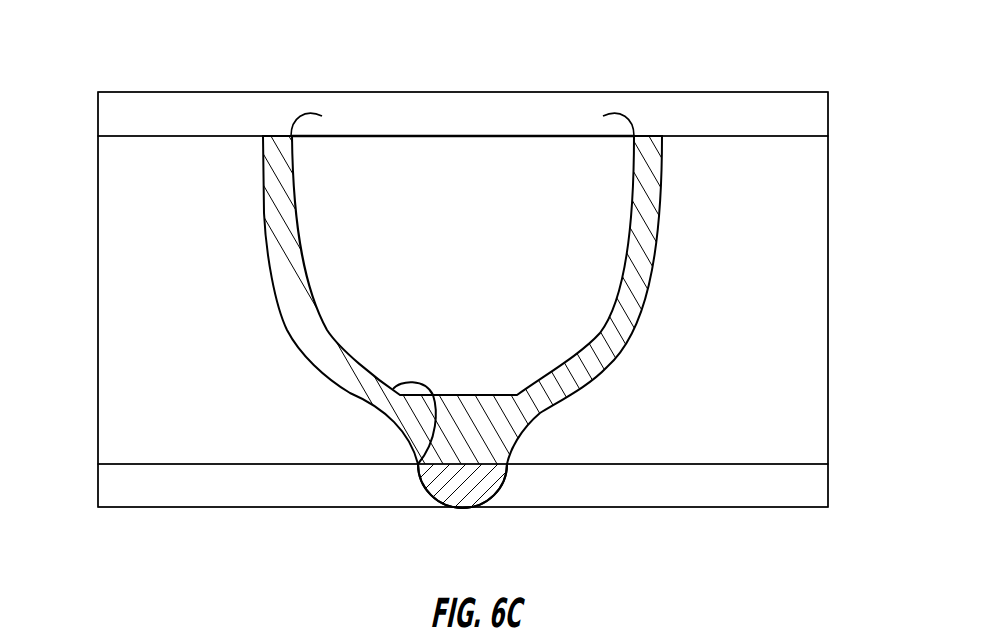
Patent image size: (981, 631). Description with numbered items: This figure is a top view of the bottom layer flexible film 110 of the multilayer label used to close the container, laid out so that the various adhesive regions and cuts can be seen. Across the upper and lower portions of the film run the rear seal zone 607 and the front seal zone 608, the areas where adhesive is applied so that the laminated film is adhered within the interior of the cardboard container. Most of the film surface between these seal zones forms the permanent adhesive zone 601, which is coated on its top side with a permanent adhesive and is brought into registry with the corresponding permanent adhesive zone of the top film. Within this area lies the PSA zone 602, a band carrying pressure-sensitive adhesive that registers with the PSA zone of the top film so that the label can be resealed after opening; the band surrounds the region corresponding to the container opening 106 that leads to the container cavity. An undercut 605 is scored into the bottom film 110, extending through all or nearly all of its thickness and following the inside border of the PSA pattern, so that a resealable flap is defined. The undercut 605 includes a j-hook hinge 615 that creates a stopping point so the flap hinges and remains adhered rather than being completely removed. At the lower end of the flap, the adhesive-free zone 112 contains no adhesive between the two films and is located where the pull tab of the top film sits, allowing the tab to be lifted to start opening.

The bottom layer flexible film 110 is at (841, 96).
The permanent adhesive zone 601 is at (797, 310).
The rear seal zone 607 is at (125, 112).
The front seal zone 608 is at (125, 484).
The PSA zone 602 is at (654, 191).
The container opening 106 is at (609, 230).
The j-hook hinge 615 is at (280, 112).
The undercut 605 is at (418, 464).
The adhesive-free zone 112 is at (507, 464).